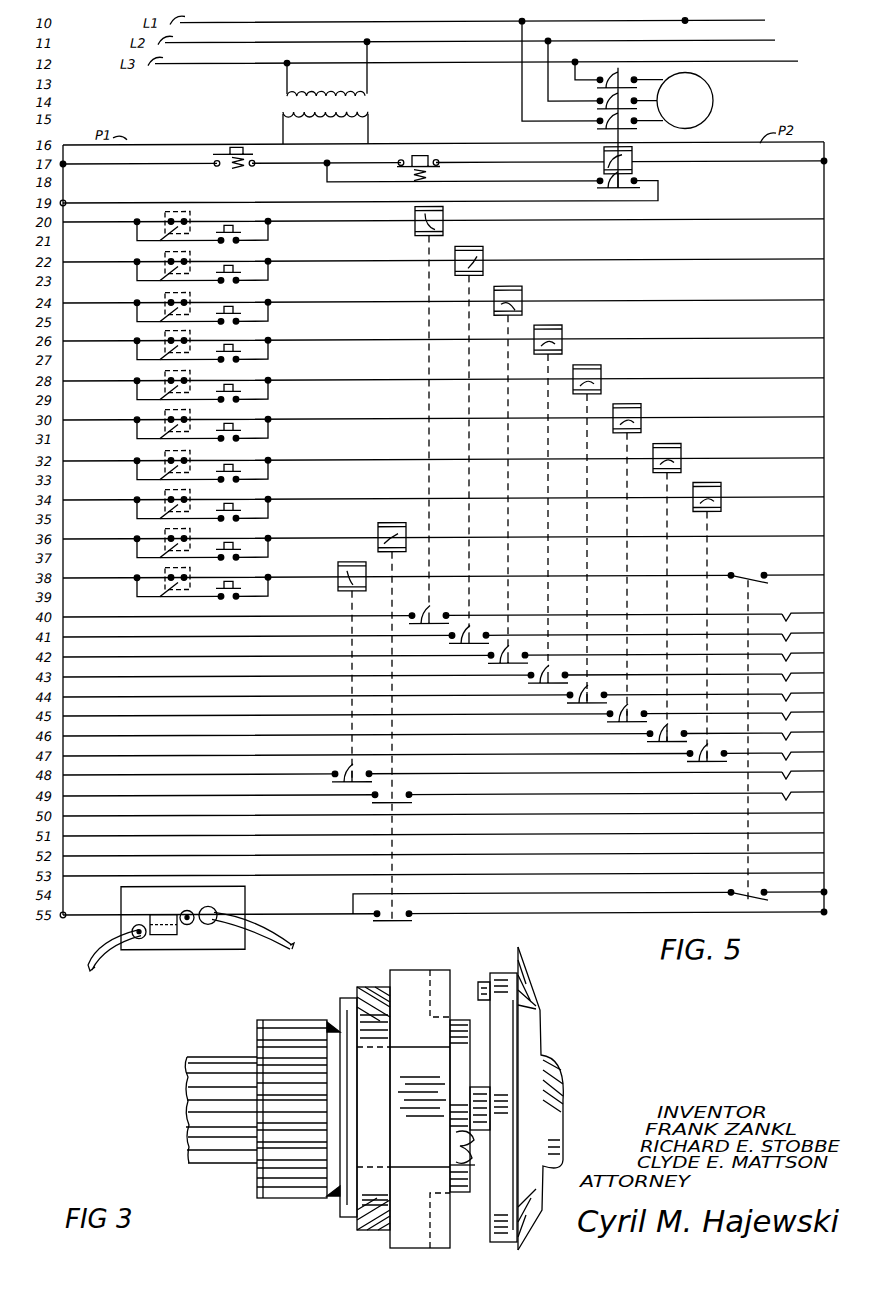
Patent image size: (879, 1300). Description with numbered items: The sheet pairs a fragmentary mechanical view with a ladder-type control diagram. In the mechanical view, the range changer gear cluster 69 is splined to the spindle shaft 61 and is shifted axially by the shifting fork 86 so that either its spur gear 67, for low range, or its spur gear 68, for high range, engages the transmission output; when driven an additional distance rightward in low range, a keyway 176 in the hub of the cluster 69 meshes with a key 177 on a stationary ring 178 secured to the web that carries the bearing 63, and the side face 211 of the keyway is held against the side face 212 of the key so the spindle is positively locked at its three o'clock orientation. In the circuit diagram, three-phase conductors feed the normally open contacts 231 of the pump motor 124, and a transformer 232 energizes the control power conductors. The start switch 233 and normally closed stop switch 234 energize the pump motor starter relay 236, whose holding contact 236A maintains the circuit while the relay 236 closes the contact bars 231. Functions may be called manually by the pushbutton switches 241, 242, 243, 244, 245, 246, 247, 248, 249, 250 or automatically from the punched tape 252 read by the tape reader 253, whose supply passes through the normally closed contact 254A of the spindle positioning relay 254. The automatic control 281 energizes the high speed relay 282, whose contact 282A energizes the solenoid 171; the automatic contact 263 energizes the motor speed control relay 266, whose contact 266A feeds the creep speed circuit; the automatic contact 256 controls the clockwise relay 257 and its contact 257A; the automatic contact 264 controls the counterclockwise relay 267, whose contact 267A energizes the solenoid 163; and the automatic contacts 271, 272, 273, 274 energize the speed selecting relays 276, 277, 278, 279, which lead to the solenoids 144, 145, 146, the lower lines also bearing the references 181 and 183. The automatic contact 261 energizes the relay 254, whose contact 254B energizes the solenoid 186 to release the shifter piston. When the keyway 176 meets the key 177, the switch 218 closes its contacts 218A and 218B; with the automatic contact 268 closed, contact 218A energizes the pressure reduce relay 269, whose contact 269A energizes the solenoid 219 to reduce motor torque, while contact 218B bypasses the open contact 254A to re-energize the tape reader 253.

In FIG. 5, the motor 124 is at (673, 100).
In FIG. 5, the normally open contacts 231 is at (612, 84).
In FIG. 5, the transformer 232 is at (374, 94).
In FIG. 5, the pushbutton start switch 233 is at (209, 169).
In FIG. 5, the stop switch 234 is at (431, 163).
In FIG. 5, the pump motor starter relay 236 is at (641, 174).
In FIG. 5, the holding contact 236A is at (645, 203).
In FIG. 5, the high speed relay 282 is at (450, 232).
In FIG. 5, the motor speed control relay 266 is at (452, 280).
In FIG. 5, the clockwise relay 257 is at (525, 313).
In FIG. 5, the counterclockwise directional relay 267 is at (564, 352).
In FIG. 5, the speed selecting relay 276 is at (593, 386).
In FIG. 5, the speed selecting relay 277 is at (633, 426).
In FIG. 5, the speed selecting relay 278 is at (673, 466).
In FIG. 5, the speed selecting relay 279 is at (713, 506).
In FIG. 5, the spindle positioning relay 254 is at (383, 515).
In FIG. 5, the pressure reduce relay 269 is at (354, 590).
In FIG. 5, the automatic control 281 is at (138, 238).
In FIG. 5, the automatic contact 263 is at (138, 278).
In FIG. 5, the automatic contact 256 is at (138, 319).
In FIG. 5, the automatic contact 264 is at (138, 357).
In FIG. 5, the automatic contact 271 is at (138, 397).
In FIG. 5, the automatic contact 272 is at (138, 436).
In FIG. 5, the automatic contact 273 is at (138, 477).
In FIG. 5, the automatic contact 274 is at (138, 516).
In FIG. 5, the automatic contact 261 is at (138, 555).
In FIG. 5, the automatic contact 268 is at (138, 594).
In FIG. 5, the pushbutton switch 241 is at (240, 227).
In FIG. 5, the pushbutton switch 242 is at (240, 267).
In FIG. 5, the pushbutton switch 243 is at (240, 308).
In FIG. 5, the pushbutton switch 244 is at (240, 346).
In FIG. 5, the pushbutton switch 245 is at (240, 386).
In FIG. 5, the pushbutton switch 246 is at (240, 425).
In FIG. 5, the pushbutton switch 247 is at (240, 466).
In FIG. 5, the pushbutton switch 248 is at (240, 505).
In FIG. 5, the pushbutton switch 249 is at (240, 544).
In FIG. 5, the pushbutton switch 250 is at (240, 583).
In FIG. 5, the relay contact 282A is at (436, 611).
In FIG. 5, the relay contact 266A is at (476, 631).
In FIG. 5, the relay contact 257A is at (515, 651).
In FIG. 5, the relay contact 267A is at (555, 671).
In FIG. 5, the relay contact 269A is at (344, 770).
In FIG. 5, the relay contact 254B is at (408, 799).
In FIG. 5, the relay contact 254A is at (412, 913).
In FIG. 5, the switch 218 is at (739, 828).
In FIG. 5, the switch contact 218A is at (748, 575).
In FIG. 5, the switch contact 218B is at (765, 906).
In FIG. 5, the solenoid 171 is at (803, 610).
In FIG. 5, the cylinder 181 is at (803, 640).
In FIG. 5, the solenoid 163 is at (803, 670).
In FIG. 5, the terminal 183 is at (803, 690).
In FIG. 5, the solenoid 144 is at (803, 709).
In FIG. 5, the solenoid 145 is at (803, 729).
In FIG. 5, the solenoid 146 is at (803, 749).
In FIG. 5, the solenoid 219 is at (803, 768).
In FIG. 5, the solenoid 186 is at (803, 789).
In FIG. 5, the punched tape 252 is at (92, 970).
In FIG. 5, the tape reader 253 is at (170, 951).
In FIG. 3, the spindle shaft 61 is at (188, 1057).
In FIG. 3, the bearing 63 is at (540, 1014).
In FIG. 3, the spur gear 67 is at (418, 975).
In FIG. 3, the spur gear 68 is at (276, 1022).
In FIG. 3, the gear cluster 69 is at (349, 983).
In FIG. 3, the shifting fork 86 is at (362, 1232).
In FIG. 3, the keyway 176 is at (458, 1144).
In FIG. 3, the key 177 is at (482, 1081).
In FIG. 3, the stationary ring 178 is at (498, 970).
In FIG. 3, the side face 211 is at (452, 1165).
In FIG. 3, the side face 212 is at (480, 1194).